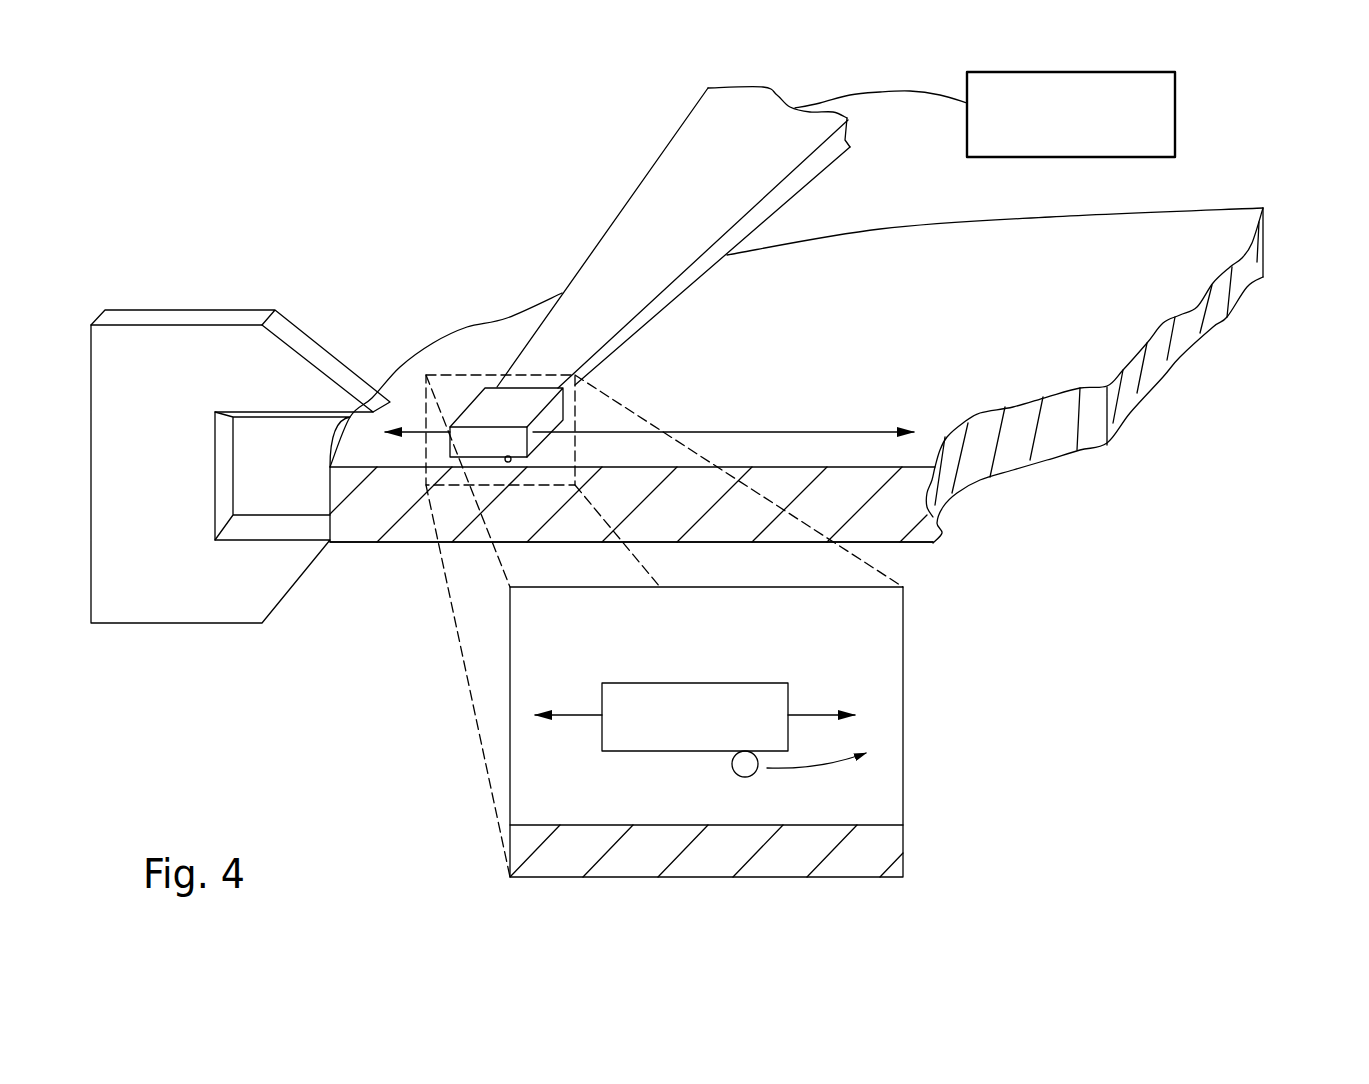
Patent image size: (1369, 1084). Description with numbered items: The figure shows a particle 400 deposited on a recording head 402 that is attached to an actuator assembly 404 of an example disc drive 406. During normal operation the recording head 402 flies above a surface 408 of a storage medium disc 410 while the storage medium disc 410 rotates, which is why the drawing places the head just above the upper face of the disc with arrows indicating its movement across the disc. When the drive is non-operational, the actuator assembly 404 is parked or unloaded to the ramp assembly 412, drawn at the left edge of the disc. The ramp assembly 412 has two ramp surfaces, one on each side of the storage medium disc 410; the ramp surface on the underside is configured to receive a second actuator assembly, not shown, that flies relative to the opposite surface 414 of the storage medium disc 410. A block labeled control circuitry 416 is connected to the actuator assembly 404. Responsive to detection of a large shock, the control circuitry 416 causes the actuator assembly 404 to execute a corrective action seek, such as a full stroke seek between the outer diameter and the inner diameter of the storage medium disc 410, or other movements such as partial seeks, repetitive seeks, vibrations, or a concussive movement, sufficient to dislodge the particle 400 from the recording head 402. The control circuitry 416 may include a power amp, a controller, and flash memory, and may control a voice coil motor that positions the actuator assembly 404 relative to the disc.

The particle 400 is at (512, 460).
The recording head 402 is at (470, 462).
The actuator assembly 404 is at (613, 223).
The disc drive 406 is at (170, 141).
The surface 408 is at (920, 303).
The storage medium disc 410 is at (1265, 240).
The ramp assembly 412 is at (297, 323).
The opposite surface 414 is at (908, 545).
The control circuitry 416 is at (1177, 122).